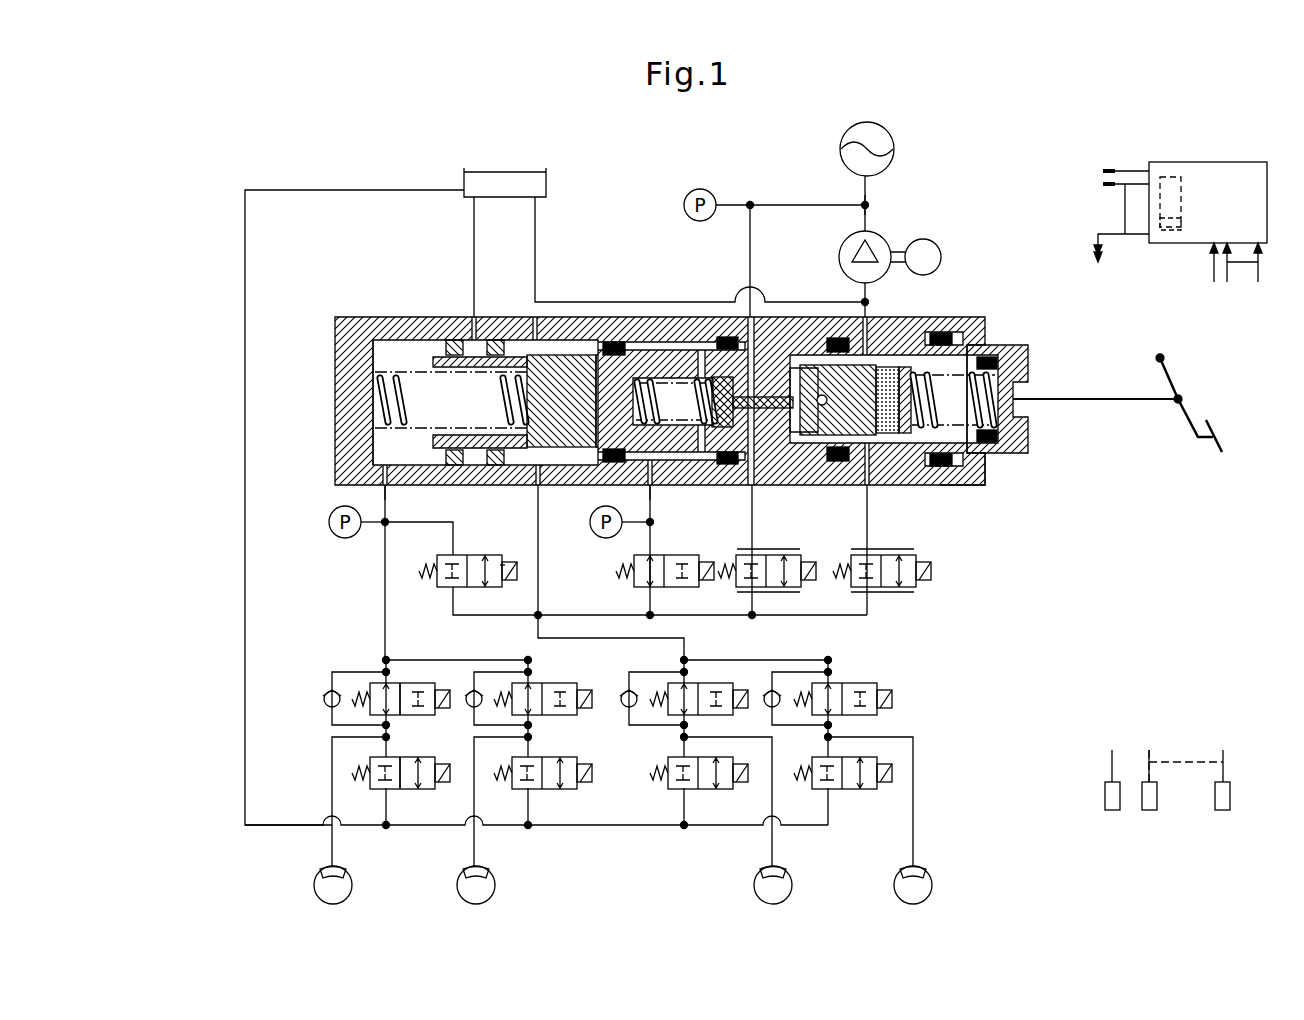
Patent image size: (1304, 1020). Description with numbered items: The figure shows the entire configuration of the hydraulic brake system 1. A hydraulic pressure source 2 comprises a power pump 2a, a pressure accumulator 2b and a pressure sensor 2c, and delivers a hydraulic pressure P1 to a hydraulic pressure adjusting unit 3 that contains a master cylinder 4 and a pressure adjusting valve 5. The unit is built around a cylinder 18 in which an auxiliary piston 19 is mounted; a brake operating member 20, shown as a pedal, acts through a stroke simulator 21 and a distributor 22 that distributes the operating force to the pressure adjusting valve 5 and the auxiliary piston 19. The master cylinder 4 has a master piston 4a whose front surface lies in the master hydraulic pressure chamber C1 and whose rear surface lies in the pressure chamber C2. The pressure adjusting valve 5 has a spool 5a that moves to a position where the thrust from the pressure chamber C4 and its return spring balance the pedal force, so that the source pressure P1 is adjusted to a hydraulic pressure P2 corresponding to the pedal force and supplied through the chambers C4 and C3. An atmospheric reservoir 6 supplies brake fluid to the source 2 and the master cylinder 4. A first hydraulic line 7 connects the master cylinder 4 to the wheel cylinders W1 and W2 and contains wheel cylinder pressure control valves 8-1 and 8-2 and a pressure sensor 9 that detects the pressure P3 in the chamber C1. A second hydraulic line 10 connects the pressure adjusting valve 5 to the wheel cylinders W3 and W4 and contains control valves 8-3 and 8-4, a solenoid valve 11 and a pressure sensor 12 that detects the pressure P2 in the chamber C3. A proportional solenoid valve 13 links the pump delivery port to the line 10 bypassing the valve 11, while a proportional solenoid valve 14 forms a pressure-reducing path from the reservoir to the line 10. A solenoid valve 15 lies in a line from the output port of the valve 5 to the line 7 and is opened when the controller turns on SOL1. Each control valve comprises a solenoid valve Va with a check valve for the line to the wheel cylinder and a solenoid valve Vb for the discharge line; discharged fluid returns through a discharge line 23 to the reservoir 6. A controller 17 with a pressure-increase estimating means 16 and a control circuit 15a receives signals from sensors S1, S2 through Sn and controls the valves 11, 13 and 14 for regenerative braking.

The hydraulic brake system 1 is at (620, 221).
The hydraulic pressure source 2 is at (838, 140).
The power pump 2a is at (880, 243).
The pressure accumulator 2b is at (893, 147).
The pressure sensor 2c is at (688, 194).
The hydraulic pressure adjusting unit 3 is at (945, 315).
The master cylinder 4 is at (451, 316).
The master piston 4a is at (557, 440).
The pressure adjusting valve 5 is at (786, 373).
The spool 5a is at (760, 430).
The atmospheric reservoir 6 is at (464, 185).
The first hydraulic line 7 is at (383, 600).
The wheel cylinder pressure control valve 8-1 is at (331, 777).
The wheel cylinder pressure control valve 8-2 is at (549, 797).
The wheel cylinder pressure control valve 8-3 is at (676, 812).
The wheel cylinder pressure control valve 8-4 is at (908, 712).
The pressure sensor 9 is at (330, 528).
The second hydraulic line 10 is at (648, 602).
The solenoid valve 11 is at (690, 555).
The pressure sensor 12 is at (597, 535).
The proportional solenoid valve 13 is at (800, 554).
The proportional solenoid valve 14 is at (920, 553).
The solenoid valve 15 is at (490, 555).
The control circuit 15a is at (1168, 232).
The means for estimating the amount of pressure increase 16 is at (1168, 180).
The controller 17 is at (1215, 165).
The cylinder 18 is at (985, 470).
The auxiliary piston 19 is at (1030, 450).
The brake operating member 20 is at (1213, 432).
The stroke simulator 21 is at (1020, 406).
The distributor 22 is at (888, 437).
The discharge line 23 is at (322, 507).
The master hydraulic pressure chamber C1 is at (380, 355).
The pressure chamber C2 is at (576, 350).
The fluid chamber C3 is at (637, 352).
The pressure chamber C4 is at (690, 388).
The hydraulic pressure P1 is at (848, 197).
The hydraulic pressure P2 is at (666, 500).
The hydraulic pressure P3 is at (400, 500).
The solenoid valve Va is at (405, 715).
The solenoid valve Vb is at (405, 788).
The wheel cylinder W1 is at (352, 875).
The wheel cylinder W2 is at (495, 875).
The wheel cylinder W3 is at (792, 875).
The wheel cylinder W4 is at (932, 875).
The sensor S1 is at (1111, 797).
The sensor S2 is at (1205, 833).
The sensor Sn is at (1221, 797).
The solenoid SOL1 is at (500, 560).